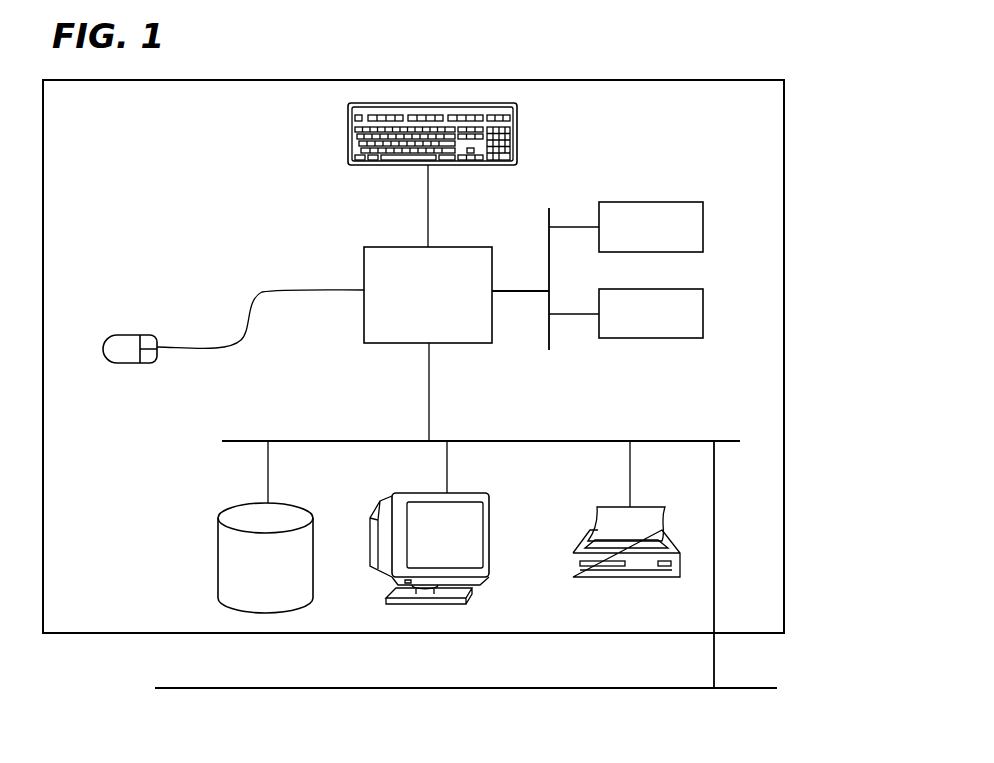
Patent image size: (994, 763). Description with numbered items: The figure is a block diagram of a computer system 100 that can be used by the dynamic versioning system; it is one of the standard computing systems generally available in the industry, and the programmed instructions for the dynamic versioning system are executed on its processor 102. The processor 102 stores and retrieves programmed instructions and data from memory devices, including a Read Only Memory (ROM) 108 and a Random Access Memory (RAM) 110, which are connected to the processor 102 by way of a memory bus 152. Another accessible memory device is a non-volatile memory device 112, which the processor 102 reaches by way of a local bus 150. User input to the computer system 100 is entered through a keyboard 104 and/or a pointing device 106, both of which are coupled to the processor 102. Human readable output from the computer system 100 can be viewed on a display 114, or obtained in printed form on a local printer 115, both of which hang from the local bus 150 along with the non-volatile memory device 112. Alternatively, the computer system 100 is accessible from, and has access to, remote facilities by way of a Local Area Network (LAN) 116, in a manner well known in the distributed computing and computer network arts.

The computer system 100 is at (826, 100).
The processor 102 is at (475, 247).
The keyboard 104 is at (519, 118).
The pointing device 106 is at (128, 357).
The Read Only Memory (ROM) 108 is at (703, 217).
The Random Access Memory (RAM) 110 is at (703, 325).
The non-volatile memory device 112 is at (235, 562).
The display 114 is at (487, 567).
The local printer 115 is at (628, 577).
The Local Area Network (LAN) 116 is at (700, 690).
The local bus 150 is at (530, 443).
The memory bus 152 is at (520, 292).